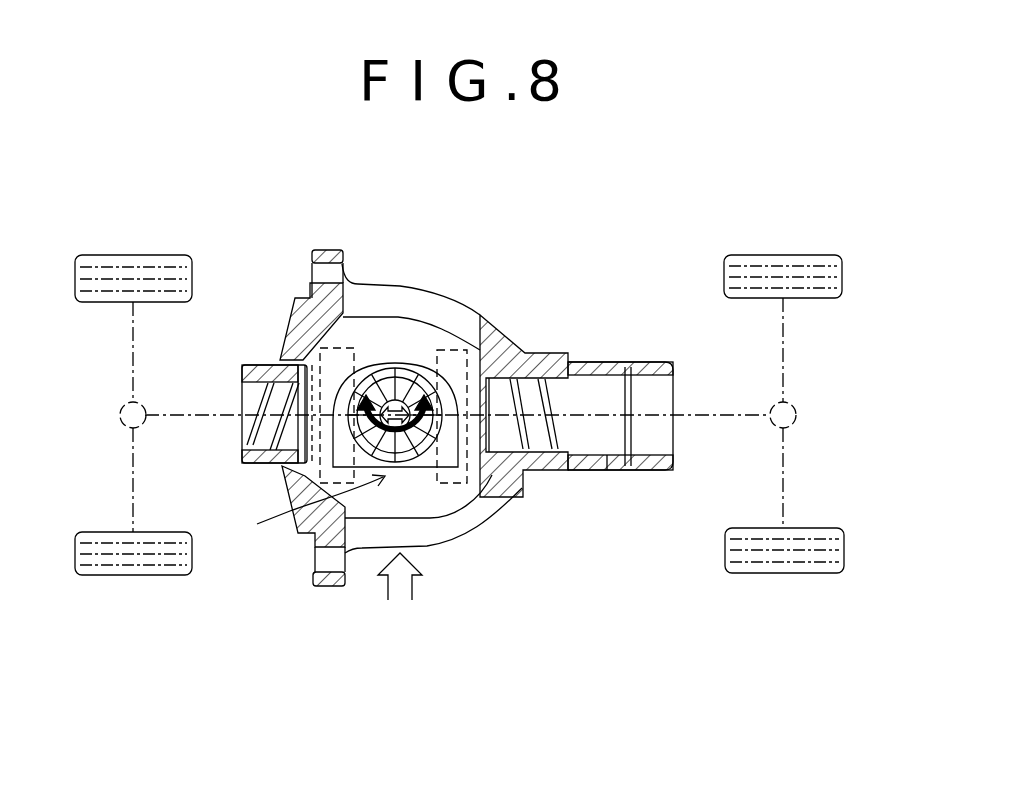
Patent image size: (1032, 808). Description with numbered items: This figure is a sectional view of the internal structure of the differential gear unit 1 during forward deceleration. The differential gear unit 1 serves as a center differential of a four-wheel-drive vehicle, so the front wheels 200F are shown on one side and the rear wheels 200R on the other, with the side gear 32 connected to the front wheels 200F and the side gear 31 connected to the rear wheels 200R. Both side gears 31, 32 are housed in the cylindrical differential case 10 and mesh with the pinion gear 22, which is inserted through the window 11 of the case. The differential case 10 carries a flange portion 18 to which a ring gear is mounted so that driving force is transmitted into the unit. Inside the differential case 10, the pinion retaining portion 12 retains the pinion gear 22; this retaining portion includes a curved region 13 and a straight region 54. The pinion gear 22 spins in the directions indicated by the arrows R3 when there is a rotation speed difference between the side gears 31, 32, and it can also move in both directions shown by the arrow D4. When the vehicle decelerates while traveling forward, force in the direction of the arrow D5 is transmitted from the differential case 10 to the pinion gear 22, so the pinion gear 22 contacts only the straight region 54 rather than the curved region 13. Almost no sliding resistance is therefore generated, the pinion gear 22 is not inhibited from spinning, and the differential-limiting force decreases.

The differential gear unit 1 is at (610, 205).
The differential case 10 is at (512, 342).
The window 11 is at (488, 318).
The pinion retaining portion 12 is at (302, 509).
The curved region 13 is at (415, 372).
The flange portion 18 is at (330, 250).
The pinion gear 22 is at (403, 378).
The side gear 31 is at (457, 350).
The side gear 32 is at (293, 352).
The straight region 54 is at (447, 482).
The arrows indicating pinion gear rotation directions R3 is at (300, 470).
The arrow indicating pinion gear movement directions D4 is at (388, 405).
The arrow indicating deceleration load direction D5 is at (405, 602).
The front wheels 200F is at (133, 255).
The rear wheels 200R is at (783, 255).